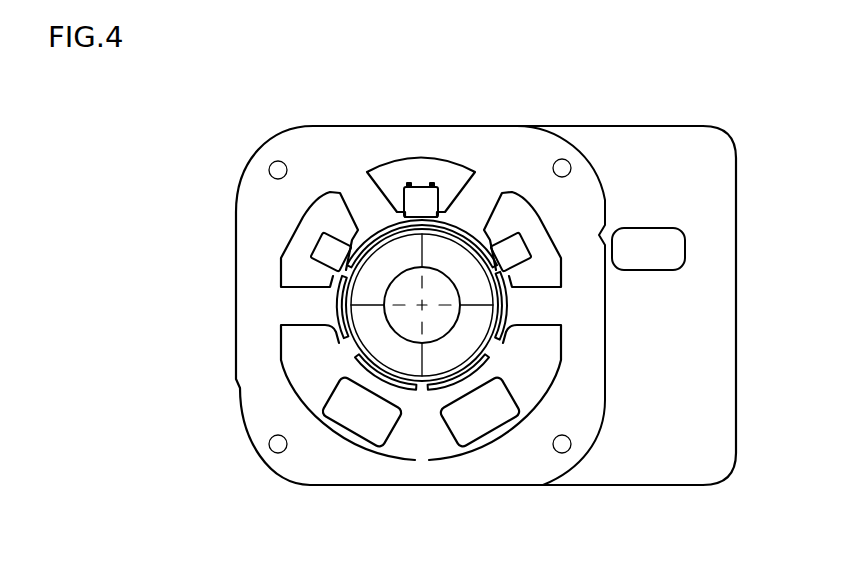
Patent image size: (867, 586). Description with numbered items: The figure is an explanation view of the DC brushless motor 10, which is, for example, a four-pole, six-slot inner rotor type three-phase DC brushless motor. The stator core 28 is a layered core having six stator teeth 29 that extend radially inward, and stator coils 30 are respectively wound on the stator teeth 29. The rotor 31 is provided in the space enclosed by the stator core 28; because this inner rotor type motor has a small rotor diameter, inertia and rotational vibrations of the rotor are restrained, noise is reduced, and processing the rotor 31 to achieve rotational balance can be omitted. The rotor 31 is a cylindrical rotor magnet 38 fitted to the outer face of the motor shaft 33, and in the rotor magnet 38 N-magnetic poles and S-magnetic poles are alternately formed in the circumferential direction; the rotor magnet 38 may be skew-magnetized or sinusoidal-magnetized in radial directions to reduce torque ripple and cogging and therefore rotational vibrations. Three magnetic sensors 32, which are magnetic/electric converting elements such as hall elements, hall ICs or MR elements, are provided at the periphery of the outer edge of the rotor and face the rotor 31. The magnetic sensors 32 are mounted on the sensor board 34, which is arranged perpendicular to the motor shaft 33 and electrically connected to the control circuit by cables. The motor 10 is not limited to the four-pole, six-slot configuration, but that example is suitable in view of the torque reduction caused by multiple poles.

The DC brushless motor 10 is at (236, 133).
The stator core 28 is at (452, 138).
The stator teeth 29 is at (370, 168).
The stator coils 30 is at (397, 427).
The rotor 31 is at (163, 291).
The magnetic sensors 32 is at (420, 188).
The motor shaft 33 is at (384, 298).
The sensor board 34 is at (676, 152).
The rotor magnet 38 is at (363, 342).